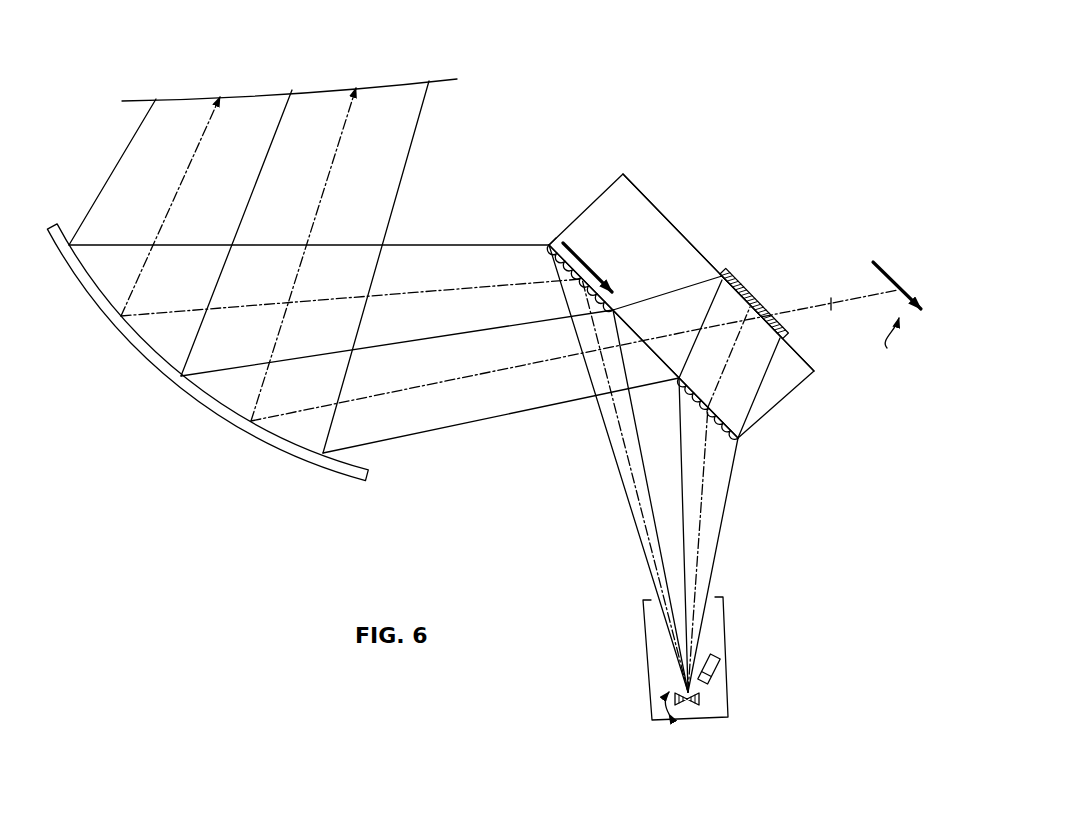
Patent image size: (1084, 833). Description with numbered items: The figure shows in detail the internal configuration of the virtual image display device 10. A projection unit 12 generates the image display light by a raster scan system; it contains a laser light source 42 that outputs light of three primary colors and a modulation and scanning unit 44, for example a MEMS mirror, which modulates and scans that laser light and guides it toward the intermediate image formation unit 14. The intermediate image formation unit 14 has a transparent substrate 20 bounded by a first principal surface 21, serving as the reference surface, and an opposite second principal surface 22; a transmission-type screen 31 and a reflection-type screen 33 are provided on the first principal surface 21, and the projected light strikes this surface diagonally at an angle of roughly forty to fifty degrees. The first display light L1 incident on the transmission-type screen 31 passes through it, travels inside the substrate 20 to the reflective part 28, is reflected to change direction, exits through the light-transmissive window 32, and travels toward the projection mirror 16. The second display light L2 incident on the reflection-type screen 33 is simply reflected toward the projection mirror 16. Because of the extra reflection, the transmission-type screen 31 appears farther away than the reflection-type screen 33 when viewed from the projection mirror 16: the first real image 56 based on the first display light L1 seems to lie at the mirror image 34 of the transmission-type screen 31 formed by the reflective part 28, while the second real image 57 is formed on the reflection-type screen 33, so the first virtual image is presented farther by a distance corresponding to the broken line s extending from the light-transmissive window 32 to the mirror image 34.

The virtual image display device 10 is at (750, 120).
The projection unit 12 is at (725, 632).
The intermediate image formation unit 14 is at (650, 305).
The projection mirror 16 is at (103, 310).
The substrate 20 is at (602, 205).
The first principal surface 21 is at (549, 245).
The second principal surface 22 is at (640, 178).
The reflective part 28 is at (750, 303).
The transmission-type screen 31 is at (739, 447).
The light-transmissive window 32 is at (646, 366).
The reflection-type screen 33 is at (545, 243).
The mirror image 34 is at (891, 346).
The light source 42 is at (718, 670).
The modulation and scanning unit 44 is at (710, 700).
The first real image 56 is at (898, 287).
The second real image 57 is at (587, 265).
The first display light L1 is at (698, 537).
The second display light L2 is at (643, 539).
The broken line s is at (574, 355).